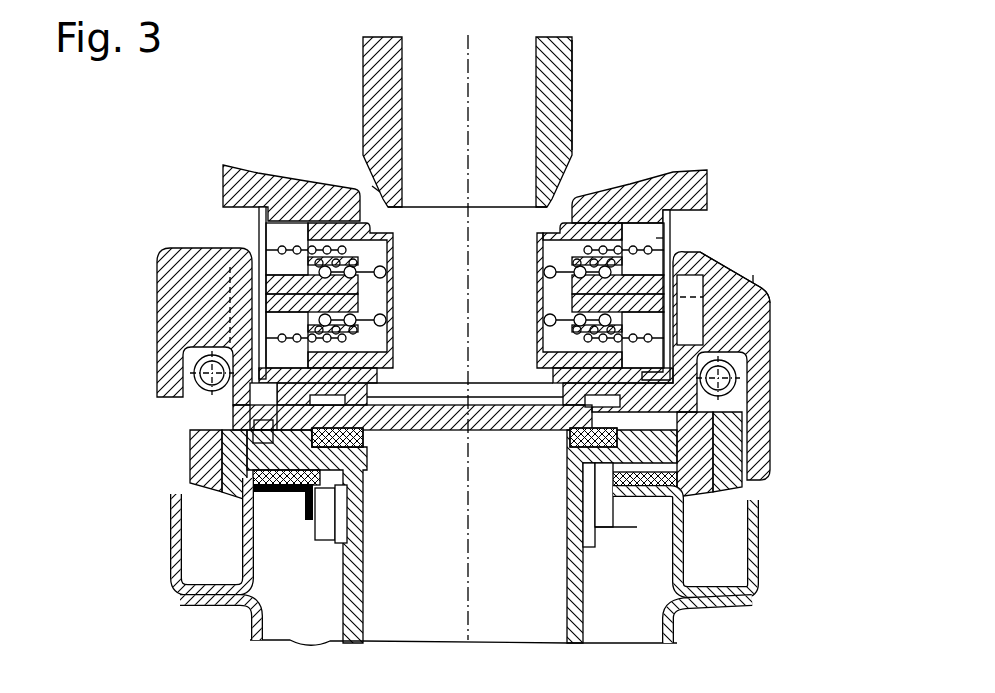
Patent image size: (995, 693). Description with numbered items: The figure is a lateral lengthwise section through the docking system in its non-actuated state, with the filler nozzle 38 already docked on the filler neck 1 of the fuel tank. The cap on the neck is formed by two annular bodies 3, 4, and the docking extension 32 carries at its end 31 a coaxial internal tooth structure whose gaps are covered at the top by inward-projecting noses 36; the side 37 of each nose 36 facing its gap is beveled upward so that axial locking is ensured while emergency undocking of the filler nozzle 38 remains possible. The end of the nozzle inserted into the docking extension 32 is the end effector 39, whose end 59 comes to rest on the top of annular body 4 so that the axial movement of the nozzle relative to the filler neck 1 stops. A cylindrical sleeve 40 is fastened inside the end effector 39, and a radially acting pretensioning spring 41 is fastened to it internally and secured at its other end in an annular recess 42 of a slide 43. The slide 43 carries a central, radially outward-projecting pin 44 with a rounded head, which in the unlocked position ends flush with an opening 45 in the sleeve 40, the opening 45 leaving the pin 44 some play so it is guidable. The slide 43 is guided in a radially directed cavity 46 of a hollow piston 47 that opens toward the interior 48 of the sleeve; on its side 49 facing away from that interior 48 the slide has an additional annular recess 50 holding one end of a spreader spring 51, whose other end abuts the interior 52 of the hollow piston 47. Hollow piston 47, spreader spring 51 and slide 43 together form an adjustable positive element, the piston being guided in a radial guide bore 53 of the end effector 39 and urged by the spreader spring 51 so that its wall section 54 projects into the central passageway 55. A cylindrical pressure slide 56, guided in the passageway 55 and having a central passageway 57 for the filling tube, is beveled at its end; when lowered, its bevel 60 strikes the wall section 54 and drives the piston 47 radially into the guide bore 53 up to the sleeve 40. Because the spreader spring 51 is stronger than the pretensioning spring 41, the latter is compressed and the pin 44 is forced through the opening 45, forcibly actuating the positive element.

The filler neck 1 is at (578, 566).
The annular body 3 is at (728, 472).
The annular body 4 is at (770, 395).
The end of docking extension 31 is at (753, 281).
The docking extension 32 is at (767, 295).
The nose 36 is at (690, 257).
The side of nose 37 is at (717, 271).
The filler nozzle 38 is at (291, 92).
The end effector 39 is at (670, 188).
The cylindrical sleeve 40 is at (260, 231).
The pretensioning spring 41 is at (648, 250).
The annular recess 42 is at (600, 247).
The slide 43 is at (556, 329).
The pin 44 is at (668, 333).
The opening 45 is at (665, 313).
The cavity 46 is at (560, 257).
The hollow piston 47 is at (560, 227).
The interior of sleeve 48 is at (641, 240).
The side of slide 49 is at (360, 288).
The additional annular recess 50 is at (350, 328).
The spreader spring 51 is at (392, 307).
The interior of hollow piston 52 is at (392, 327).
The guide bore 53 is at (287, 224).
The wall section 54 is at (393, 240).
The central passageway 55 is at (520, 324).
The pressure slide 56 is at (568, 72).
The central passageway of pressure slide 57 is at (453, 167).
The end of end effector 59 is at (252, 398).
The bevel 60 is at (374, 188).